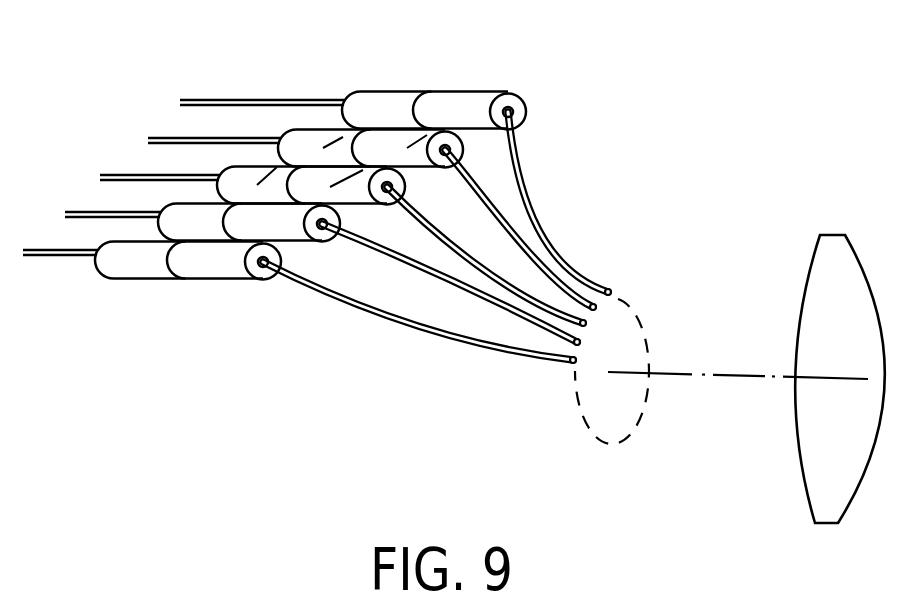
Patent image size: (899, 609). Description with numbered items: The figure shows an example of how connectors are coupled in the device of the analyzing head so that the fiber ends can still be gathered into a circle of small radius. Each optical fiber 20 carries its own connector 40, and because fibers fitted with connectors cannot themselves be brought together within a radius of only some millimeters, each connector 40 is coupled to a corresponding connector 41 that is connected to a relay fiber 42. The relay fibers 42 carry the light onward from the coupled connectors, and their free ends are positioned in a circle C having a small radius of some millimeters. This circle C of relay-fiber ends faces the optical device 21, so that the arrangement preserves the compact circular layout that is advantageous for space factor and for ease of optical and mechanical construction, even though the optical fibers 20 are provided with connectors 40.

The optical fiber 20 is at (190, 178).
The connector 40 is at (300, 137).
The connectors 41 is at (370, 165).
The relay fiber 42 is at (480, 267).
The optical device 21 is at (833, 235).
The circle C is at (598, 436).